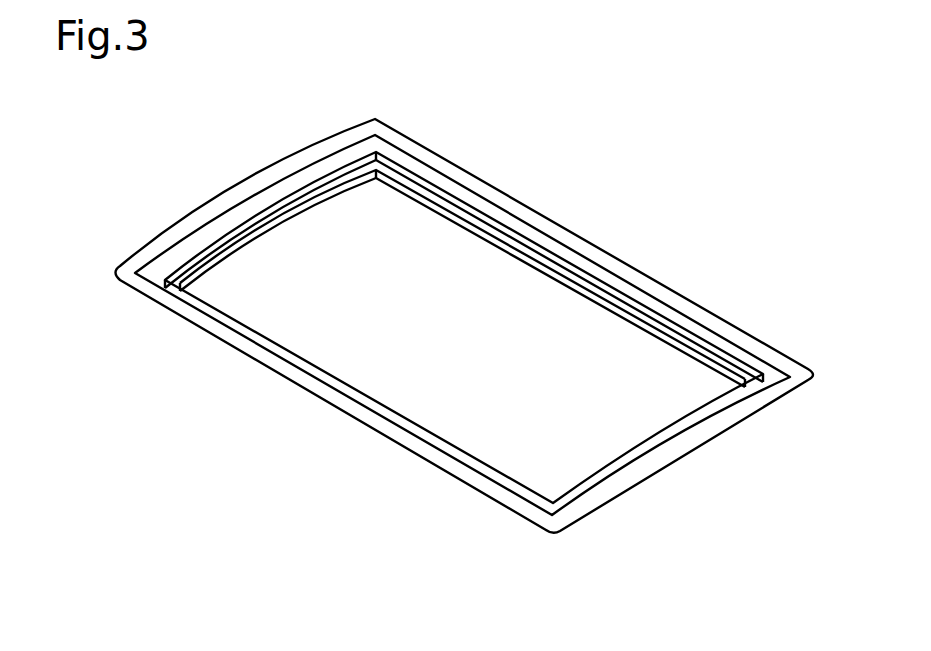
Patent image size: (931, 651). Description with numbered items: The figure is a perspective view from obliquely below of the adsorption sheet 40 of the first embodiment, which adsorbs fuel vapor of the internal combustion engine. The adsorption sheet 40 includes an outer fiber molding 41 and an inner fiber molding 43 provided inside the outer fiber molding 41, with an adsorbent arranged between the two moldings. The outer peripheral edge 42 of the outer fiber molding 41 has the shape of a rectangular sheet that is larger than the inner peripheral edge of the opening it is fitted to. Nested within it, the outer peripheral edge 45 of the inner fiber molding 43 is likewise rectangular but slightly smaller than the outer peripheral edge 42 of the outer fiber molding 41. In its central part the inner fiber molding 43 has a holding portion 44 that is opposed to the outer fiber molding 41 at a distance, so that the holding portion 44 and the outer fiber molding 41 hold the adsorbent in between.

The adsorption sheet 40 is at (274, 458).
The outer fiber molding 41 is at (627, 252).
The outer peripheral edge of the outer fiber molding 42 is at (560, 233).
The inner fiber molding 43 is at (302, 180).
The holding portion 44 is at (236, 270).
The outer peripheral edge of the inner fiber molding 45 is at (270, 216).